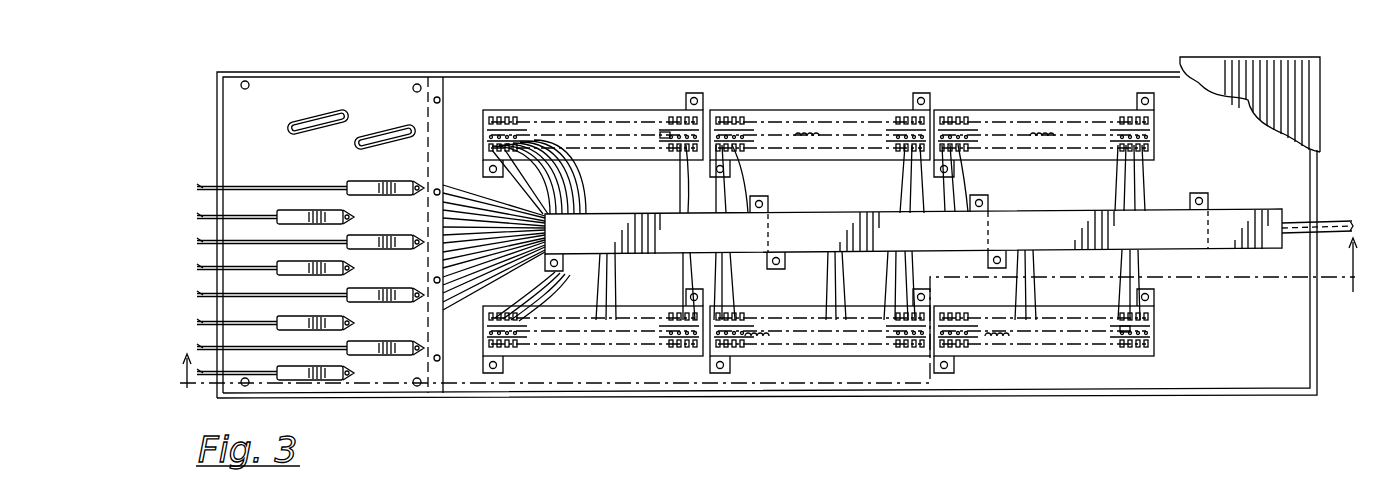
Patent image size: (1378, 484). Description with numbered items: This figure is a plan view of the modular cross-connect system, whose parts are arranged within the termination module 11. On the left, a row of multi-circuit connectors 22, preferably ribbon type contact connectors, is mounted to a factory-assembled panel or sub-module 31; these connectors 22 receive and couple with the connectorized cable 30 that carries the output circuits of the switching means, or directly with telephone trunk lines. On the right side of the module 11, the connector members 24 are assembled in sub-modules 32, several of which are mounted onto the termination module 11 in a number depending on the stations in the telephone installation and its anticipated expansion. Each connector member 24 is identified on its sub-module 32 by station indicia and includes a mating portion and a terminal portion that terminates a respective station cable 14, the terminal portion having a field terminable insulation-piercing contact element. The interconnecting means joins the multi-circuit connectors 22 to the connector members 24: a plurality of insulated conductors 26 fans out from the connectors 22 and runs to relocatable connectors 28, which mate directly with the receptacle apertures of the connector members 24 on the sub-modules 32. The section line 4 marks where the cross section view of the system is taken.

The terminal assembly 11 is at (1254, 360).
The conductor cable 14 is at (1332, 222).
The mounting slots 22 is at (400, 118).
The contact springs 24 is at (806, 140).
The conductors 26 is at (470, 212).
The terminals 28 is at (668, 130).
The connectors 30 is at (245, 268).
The panel 31 is at (232, 136).
The terminal blocks 32 is at (1072, 110).
The section line 4- 4 is at (768, 327).